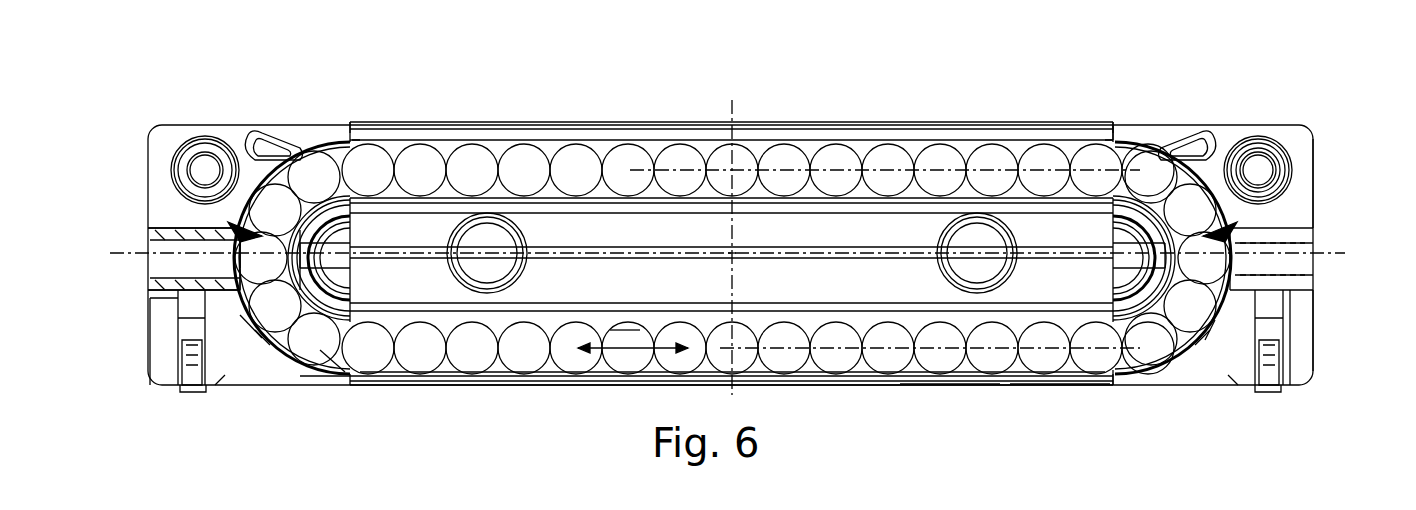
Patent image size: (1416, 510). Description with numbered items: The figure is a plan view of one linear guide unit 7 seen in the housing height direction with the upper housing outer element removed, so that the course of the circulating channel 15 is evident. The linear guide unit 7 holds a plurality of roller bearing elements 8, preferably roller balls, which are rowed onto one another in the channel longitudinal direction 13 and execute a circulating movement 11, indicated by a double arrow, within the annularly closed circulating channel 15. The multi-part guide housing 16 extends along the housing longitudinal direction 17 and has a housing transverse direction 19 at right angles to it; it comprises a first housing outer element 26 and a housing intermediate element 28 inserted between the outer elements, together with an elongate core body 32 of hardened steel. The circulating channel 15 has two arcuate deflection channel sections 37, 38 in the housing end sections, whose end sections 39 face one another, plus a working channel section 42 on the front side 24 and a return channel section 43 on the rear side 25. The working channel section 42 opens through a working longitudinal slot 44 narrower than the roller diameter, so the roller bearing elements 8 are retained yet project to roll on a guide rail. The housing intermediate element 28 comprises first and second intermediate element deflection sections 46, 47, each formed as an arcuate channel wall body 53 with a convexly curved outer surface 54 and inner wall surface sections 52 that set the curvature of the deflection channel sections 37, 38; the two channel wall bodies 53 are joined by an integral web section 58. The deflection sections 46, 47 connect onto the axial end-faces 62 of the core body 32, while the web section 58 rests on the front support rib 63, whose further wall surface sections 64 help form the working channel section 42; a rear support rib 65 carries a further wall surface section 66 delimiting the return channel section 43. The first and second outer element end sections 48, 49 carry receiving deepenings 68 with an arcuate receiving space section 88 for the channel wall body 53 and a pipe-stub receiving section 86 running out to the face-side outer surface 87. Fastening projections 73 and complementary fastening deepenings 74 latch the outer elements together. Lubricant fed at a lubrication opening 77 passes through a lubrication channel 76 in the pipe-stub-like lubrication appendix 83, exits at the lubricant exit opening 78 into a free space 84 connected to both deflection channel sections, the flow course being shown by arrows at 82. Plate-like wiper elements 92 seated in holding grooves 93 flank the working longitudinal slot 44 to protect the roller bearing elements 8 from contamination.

The linear guide unit 7 is at (1312, 108).
The roller bearing elements 8 is at (932, 352).
The circulating movement 11 is at (625, 352).
The channel longitudinal direction 13 is at (682, 165).
The circulating channel 15 is at (550, 140).
The guide housing 16 is at (1236, 125).
The housing longitudinal direction 17 is at (822, 250).
The housing transverse direction 19 is at (736, 130).
The front side 24 is at (468, 395).
The rear side 25 is at (476, 112).
The first housing outer element 26 is at (1142, 130).
The housing intermediate element 28 is at (1072, 380).
The core body 32 is at (900, 205).
The first deflection channel section 37 is at (268, 150).
The second deflection channel section 38 is at (1198, 150).
The end sections of deflection channel section 39 is at (340, 148).
The working channel section 42 is at (556, 372).
The return channel section 43 is at (606, 140).
The working longitudinal slot 44 is at (500, 384).
The first intermediate element deflection section 46 is at (262, 335).
The second intermediate element deflection section 47 is at (1190, 340).
The first outer element end section 48 is at (168, 135).
The second outer element end section 49 is at (1300, 182).
The inner wall surface section 52 is at (272, 345).
The arcuate channel wall body 53 is at (330, 150).
The convexly curved outer surface 54 is at (228, 222).
The web section 58 is at (968, 384).
The axial end-face 62 is at (340, 300).
The front support rib 63 is at (662, 320).
The further wall surface sections 64 is at (390, 378).
The rear support rib 65 is at (440, 140).
The further wall surface section 66 is at (970, 145).
The receiving deepening 68 is at (225, 385).
The fastening projection 73 is at (1280, 162).
The fastening deepening 74 is at (188, 165).
The lubrication channel 76 is at (186, 292).
The lubrication opening 77 is at (160, 272).
The lubricant exit opening 78 is at (232, 160).
The lubricant flow course 82 is at (148, 256).
The lubrication appendix 83 is at (155, 230).
The free space 84 is at (292, 345).
The pipe-stub receiving section 86 is at (152, 290).
The face-side outer surface 87 is at (1316, 308).
The arcuate receiving space section 88 is at (312, 352).
The wiper element 92 is at (190, 392).
The holding groove 93 is at (178, 390).